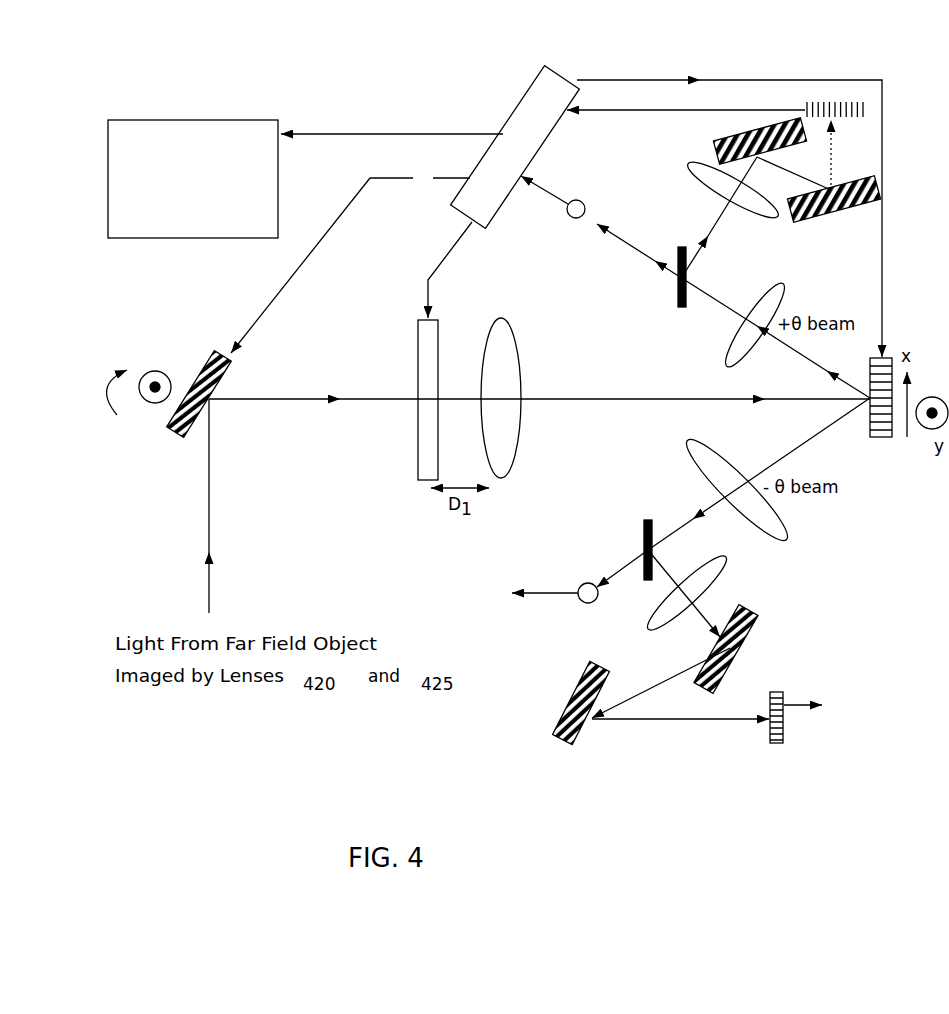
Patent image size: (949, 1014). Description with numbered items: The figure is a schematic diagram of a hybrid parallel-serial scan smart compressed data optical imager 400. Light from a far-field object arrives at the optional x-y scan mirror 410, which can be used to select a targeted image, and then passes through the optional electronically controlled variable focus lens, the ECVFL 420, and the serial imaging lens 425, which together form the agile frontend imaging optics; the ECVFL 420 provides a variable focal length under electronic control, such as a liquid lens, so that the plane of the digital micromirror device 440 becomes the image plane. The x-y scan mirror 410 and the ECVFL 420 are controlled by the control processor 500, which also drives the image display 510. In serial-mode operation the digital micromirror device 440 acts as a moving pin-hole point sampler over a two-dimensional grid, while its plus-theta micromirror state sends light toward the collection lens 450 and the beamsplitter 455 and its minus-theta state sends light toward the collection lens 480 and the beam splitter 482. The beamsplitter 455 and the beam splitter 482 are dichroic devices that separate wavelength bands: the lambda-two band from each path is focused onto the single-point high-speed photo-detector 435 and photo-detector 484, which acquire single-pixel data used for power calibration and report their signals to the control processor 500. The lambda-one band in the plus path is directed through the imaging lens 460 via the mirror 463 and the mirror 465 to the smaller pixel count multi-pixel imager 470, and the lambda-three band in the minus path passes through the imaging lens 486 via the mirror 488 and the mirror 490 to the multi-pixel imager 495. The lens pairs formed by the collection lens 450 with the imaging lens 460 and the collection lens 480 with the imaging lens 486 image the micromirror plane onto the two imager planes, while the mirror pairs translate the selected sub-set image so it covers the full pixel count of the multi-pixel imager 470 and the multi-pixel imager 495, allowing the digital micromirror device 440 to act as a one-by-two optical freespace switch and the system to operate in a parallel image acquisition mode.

The compressed data optical imager 400 is at (207, 49).
The x-y scan mirror 410 is at (169, 410).
The ECVFL 420 is at (415, 446).
The imaging lens 425 is at (520, 446).
The photo-detector 435 is at (567, 222).
The digital micromirror device 440 is at (886, 419).
The collection lens 450 is at (750, 300).
The beamsplitter 455 is at (669, 297).
The imaging lens 460 is at (692, 183).
The mirror 463 is at (734, 141).
The mirror 465 is at (833, 212).
The multi-pixel imager 470 is at (867, 110).
The collection lens 480 is at (789, 547).
The beam splitter 482 is at (638, 536).
The photo-detector 484 is at (520, 576).
The imaging lens 486 is at (664, 600).
The mirror 488 is at (742, 657).
The mirror 490 is at (571, 702).
The multi-pixel imager 495 is at (843, 736).
The control processor 500 is at (508, 118).
The image display 510 is at (107, 180).